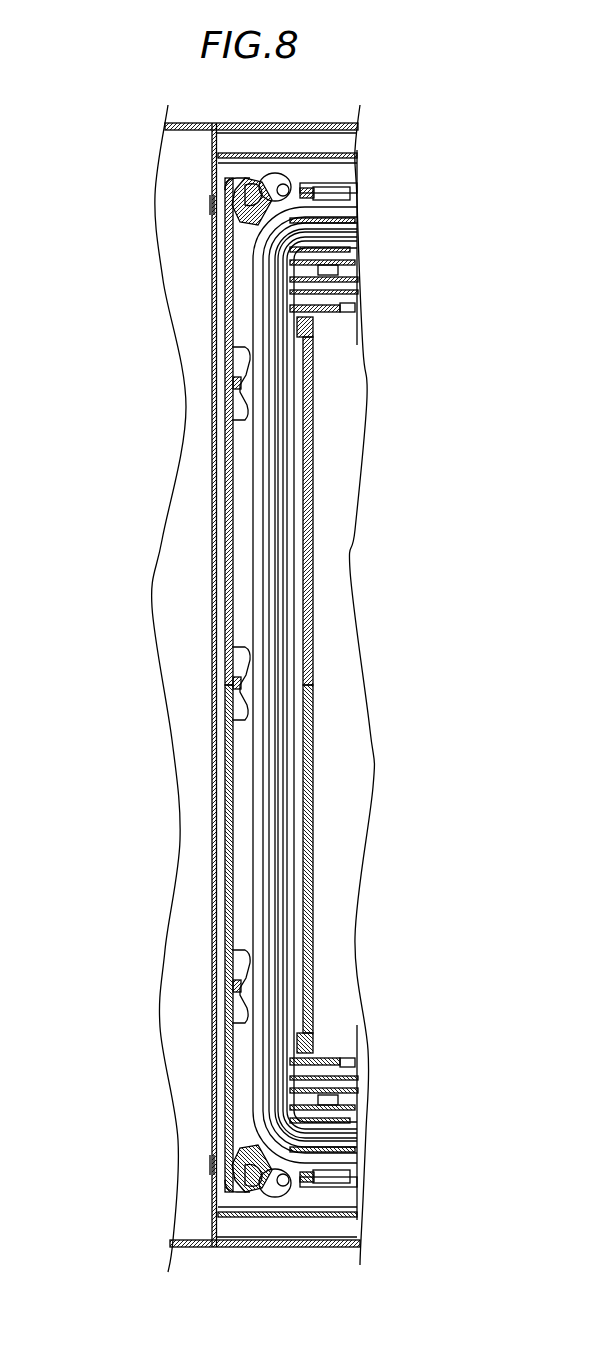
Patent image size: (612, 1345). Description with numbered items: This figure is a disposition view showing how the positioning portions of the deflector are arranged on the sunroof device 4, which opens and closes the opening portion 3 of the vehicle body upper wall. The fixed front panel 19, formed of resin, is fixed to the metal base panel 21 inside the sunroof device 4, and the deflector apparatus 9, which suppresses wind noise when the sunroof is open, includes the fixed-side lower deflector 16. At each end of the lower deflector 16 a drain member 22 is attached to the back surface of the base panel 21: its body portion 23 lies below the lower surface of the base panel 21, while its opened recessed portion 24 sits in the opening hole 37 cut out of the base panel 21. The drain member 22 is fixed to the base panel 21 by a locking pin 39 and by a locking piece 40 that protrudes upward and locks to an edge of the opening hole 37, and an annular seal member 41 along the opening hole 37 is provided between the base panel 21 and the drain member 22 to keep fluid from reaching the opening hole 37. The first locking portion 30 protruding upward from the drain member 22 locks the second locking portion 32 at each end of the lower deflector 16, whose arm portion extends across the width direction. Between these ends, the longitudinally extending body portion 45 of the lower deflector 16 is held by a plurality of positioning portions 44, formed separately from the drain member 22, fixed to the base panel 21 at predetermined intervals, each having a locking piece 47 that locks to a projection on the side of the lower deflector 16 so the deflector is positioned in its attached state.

The opening portion 3 is at (210, 488).
The sunroof device 4 is at (133, 117).
The deflector apparatus 9 is at (176, 164).
The lower deflector 16 is at (215, 757).
The front panel 19 is at (178, 862).
The base panel 21 is at (243, 452).
The drain member 22 is at (227, 252).
The body portion 23 is at (288, 183).
The recessed portion 24 is at (266, 178).
The first locking portion 30 is at (215, 233).
The second locking portion 32 is at (213, 205).
The opening hole 37 is at (318, 194).
The locking pin 39 is at (258, 195).
The locking piece 40 is at (322, 195).
The seal member 41 is at (335, 268).
The positioning portion 44 is at (235, 349).
The body portion 45 is at (215, 793).
The locking piece 47 is at (235, 383).